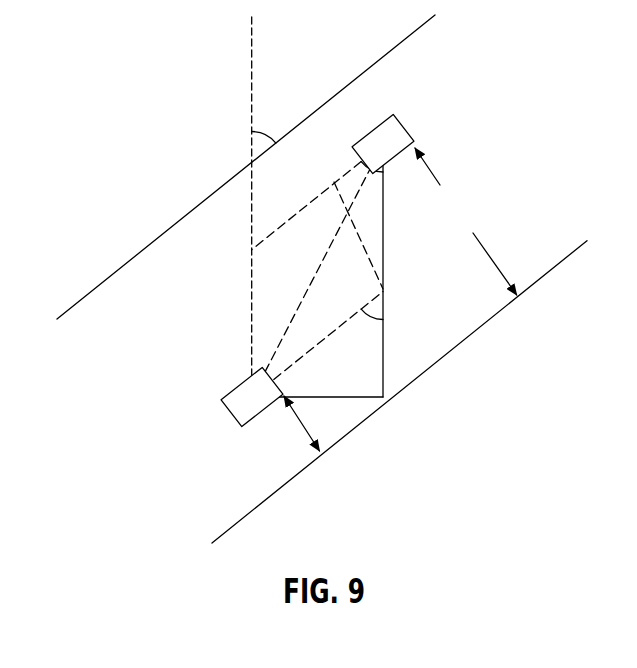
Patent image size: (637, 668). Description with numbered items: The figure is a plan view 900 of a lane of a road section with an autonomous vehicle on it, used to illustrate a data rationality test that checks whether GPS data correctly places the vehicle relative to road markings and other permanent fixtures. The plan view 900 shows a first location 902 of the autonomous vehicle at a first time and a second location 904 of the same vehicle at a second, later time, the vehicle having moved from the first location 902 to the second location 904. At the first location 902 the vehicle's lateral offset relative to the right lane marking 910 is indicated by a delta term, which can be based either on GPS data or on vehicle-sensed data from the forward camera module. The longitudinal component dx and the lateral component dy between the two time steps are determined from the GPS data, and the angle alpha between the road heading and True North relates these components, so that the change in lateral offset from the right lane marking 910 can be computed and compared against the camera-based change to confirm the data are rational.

The plan view 900 is at (111, 90).
The first location 902 is at (236, 389).
The second location 904 is at (373, 128).
The right lane marking 910 is at (415, 382).